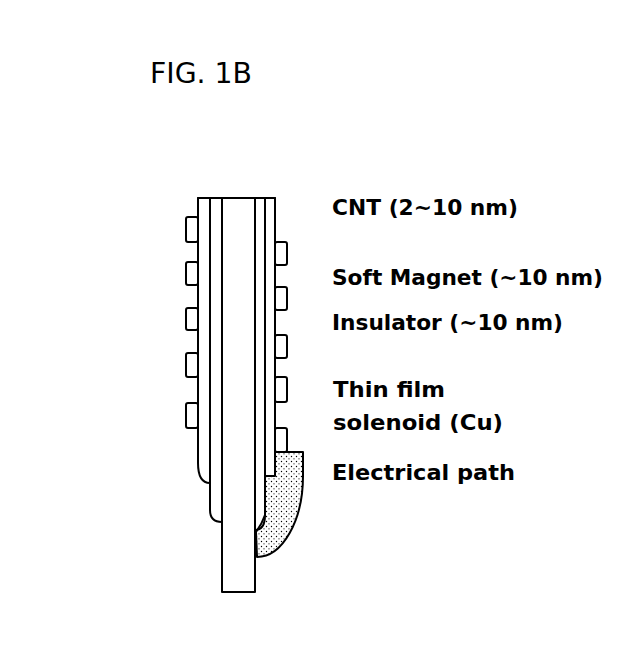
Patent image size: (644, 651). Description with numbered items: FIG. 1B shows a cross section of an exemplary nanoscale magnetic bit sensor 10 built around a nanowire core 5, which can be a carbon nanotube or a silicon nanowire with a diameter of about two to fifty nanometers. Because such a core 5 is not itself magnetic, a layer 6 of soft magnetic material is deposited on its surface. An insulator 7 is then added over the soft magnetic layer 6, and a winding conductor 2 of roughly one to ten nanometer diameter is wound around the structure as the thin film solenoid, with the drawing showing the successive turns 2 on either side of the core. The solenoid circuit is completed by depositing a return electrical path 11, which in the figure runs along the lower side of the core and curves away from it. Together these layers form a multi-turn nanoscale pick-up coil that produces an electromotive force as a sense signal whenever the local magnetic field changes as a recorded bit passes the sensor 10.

The magnetic bit sensor 10 is at (124, 491).
The core 5 is at (257, 210).
The layer of soft magnetic material 6 is at (274, 273).
The insulator 7 is at (323, 318).
The winding conductor 2 is at (182, 322).
The return electrical path 11 is at (307, 471).